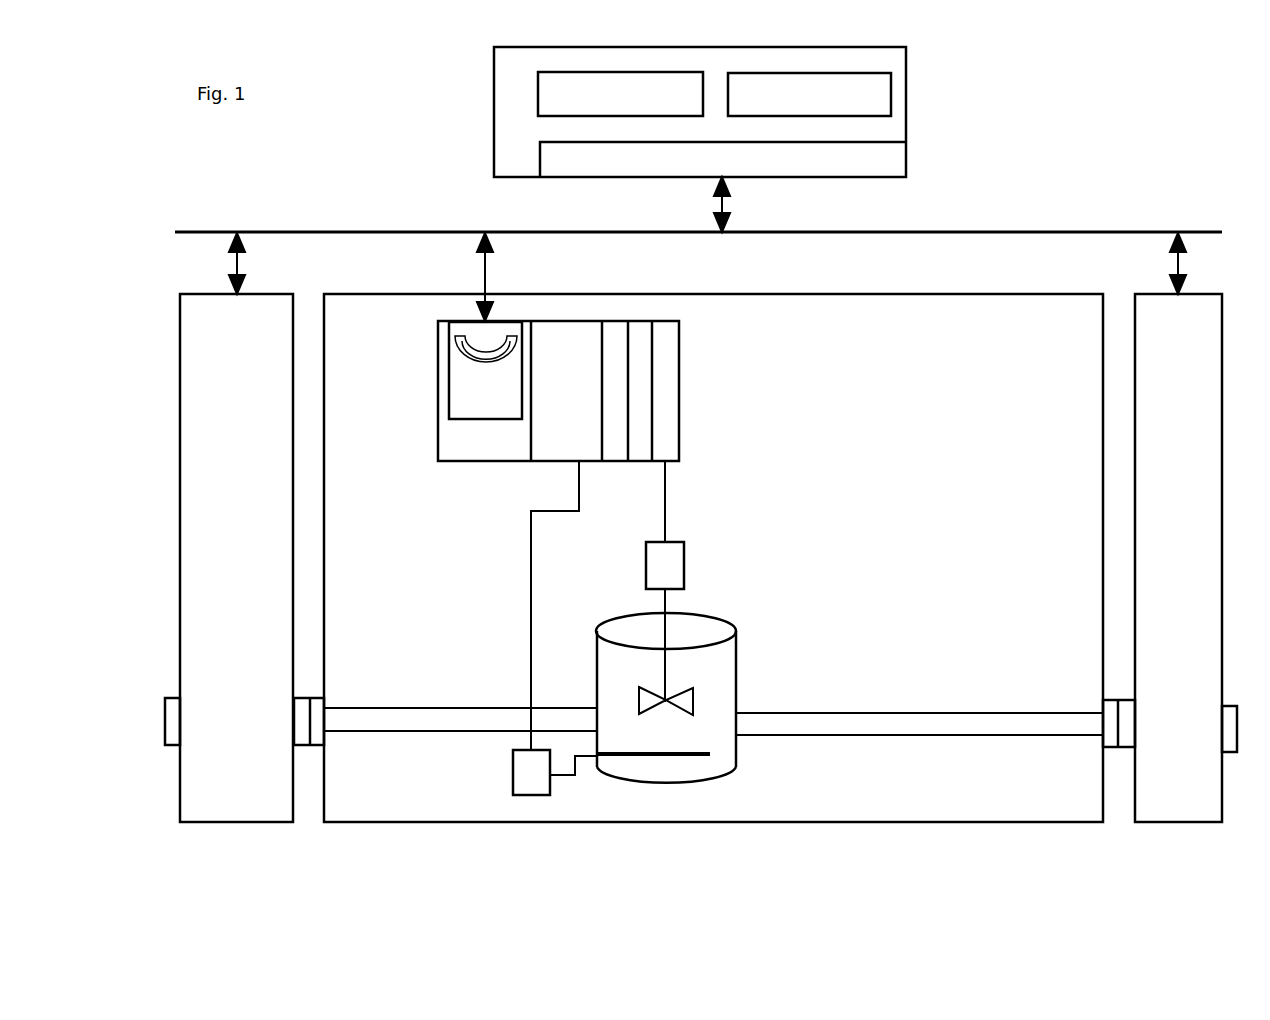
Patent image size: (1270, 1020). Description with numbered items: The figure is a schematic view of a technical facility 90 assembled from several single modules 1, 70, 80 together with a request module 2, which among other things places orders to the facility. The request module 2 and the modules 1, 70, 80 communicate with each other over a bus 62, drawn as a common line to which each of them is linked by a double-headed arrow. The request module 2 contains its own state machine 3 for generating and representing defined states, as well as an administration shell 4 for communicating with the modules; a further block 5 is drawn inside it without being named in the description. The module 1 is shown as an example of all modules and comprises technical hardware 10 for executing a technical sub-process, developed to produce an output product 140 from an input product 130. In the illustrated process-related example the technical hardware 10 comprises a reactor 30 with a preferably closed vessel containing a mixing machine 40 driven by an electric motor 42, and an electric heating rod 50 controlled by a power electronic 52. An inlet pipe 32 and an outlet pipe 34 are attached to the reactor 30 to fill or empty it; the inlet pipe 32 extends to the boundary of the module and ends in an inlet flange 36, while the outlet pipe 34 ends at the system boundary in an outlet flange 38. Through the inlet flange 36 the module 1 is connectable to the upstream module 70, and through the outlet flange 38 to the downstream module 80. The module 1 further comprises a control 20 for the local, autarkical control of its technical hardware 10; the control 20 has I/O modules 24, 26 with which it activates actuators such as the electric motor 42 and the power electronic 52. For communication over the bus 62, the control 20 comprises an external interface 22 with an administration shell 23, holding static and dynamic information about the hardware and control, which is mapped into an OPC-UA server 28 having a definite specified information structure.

The module 1 is at (1048, 337).
The request module 2 is at (521, 104).
The state machine 3 is at (817, 104).
The administration shell 4 is at (725, 170).
The processor 5 is at (624, 104).
The technical hardware 10 is at (790, 564).
The control 20 is at (584, 370).
The external interface 22 is at (501, 445).
The administration shell 23 is at (465, 350).
The I/O module 24 is at (640, 418).
The I/O module 26 is at (670, 445).
The OPC-UA server 28 is at (501, 404).
The reactor 30 is at (727, 698).
The inlet pipe 32 is at (412, 723).
The outlet pipe 34 is at (897, 723).
The inlet flange 36 is at (325, 705).
The outlet flange 38 is at (1103, 713).
The mixing machine 40 is at (688, 697).
The electric motor 42 is at (677, 553).
The electric heating rod 50 is at (707, 757).
The power electronic 52 is at (530, 764).
The bus 62 is at (836, 232).
The upstream module 70 is at (247, 342).
The downstream module 80 is at (1188, 342).
The technical facility 90 is at (1188, 156).
The input product 130 is at (322, 720).
The output product 140 is at (1103, 727).